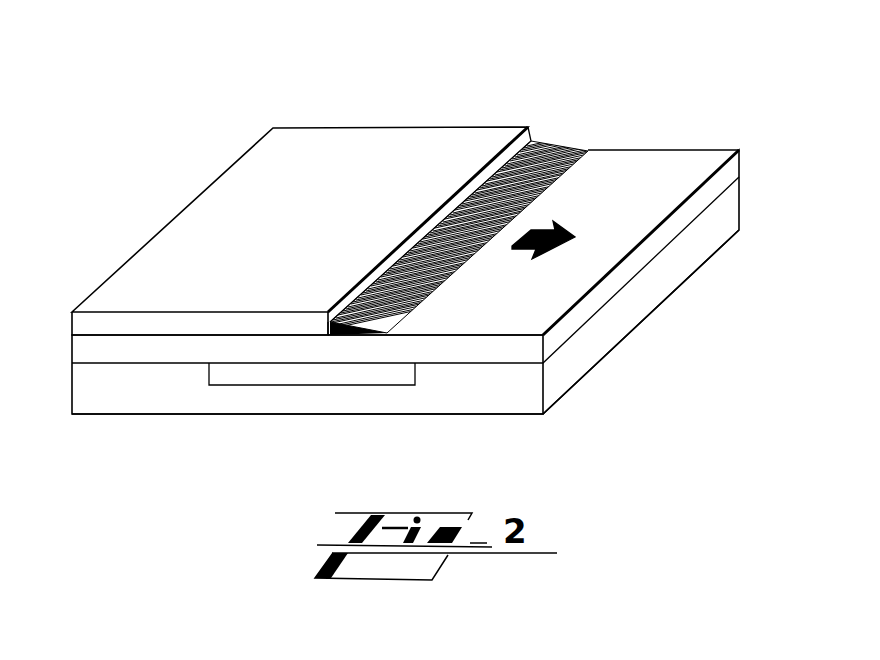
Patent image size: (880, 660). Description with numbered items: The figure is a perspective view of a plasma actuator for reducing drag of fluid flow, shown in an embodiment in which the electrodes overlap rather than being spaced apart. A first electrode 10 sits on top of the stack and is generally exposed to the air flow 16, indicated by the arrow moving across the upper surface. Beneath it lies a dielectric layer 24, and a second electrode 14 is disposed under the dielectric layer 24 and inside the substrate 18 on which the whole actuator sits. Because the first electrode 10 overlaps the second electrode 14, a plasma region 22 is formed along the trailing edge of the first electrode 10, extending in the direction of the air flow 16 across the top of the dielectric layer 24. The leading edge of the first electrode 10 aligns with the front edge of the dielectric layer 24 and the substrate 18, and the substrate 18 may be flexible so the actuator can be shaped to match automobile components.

The first electrode 10 is at (337, 141).
The second electrode 14 is at (239, 373).
The air flow 16 is at (552, 223).
The substrate 18 is at (575, 367).
The plasma region 22 is at (553, 140).
The dielectric layer 24 is at (605, 295).